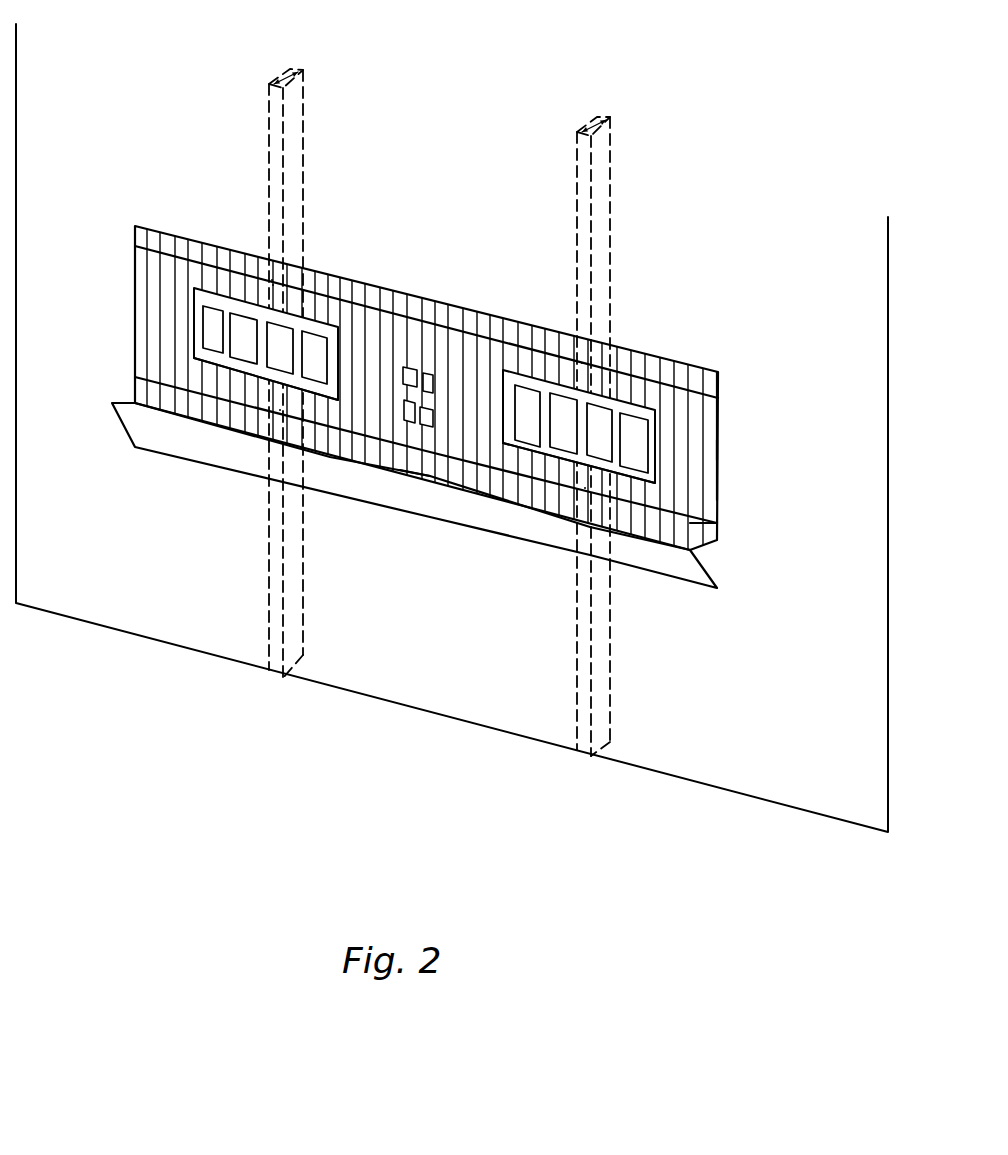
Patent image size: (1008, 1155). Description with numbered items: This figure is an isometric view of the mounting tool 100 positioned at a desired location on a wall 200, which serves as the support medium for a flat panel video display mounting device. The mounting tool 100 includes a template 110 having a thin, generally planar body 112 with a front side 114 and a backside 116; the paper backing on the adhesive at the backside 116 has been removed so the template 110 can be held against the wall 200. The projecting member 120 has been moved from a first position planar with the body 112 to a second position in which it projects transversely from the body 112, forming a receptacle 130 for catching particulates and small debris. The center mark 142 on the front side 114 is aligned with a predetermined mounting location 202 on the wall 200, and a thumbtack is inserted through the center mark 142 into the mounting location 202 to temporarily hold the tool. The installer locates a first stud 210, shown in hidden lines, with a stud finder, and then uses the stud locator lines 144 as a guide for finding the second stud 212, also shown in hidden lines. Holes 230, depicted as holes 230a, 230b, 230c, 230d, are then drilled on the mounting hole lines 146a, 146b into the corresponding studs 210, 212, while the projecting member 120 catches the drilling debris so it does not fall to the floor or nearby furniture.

The mounting tool 100 is at (441, 405).
The template 110 is at (718, 488).
The body 112 is at (713, 473).
The front side 114 is at (712, 504).
The backside 116 is at (718, 453).
The projecting member 120 is at (158, 455).
The receptacle 130 is at (408, 478).
The center mark 142 is at (418, 392).
The stud locator lines 144 is at (322, 284).
The mounting hole line 146a is at (342, 302).
The mounting hole line 146b is at (505, 467).
The wall 200 is at (780, 740).
The mounting location 202 is at (417, 397).
The first stud 210 is at (290, 140).
The second stud 212 is at (600, 165).
The holes 230 is at (272, 278).
The hole 230a is at (273, 285).
The hole 230b is at (582, 363).
The hole 230c is at (280, 410).
The hole 230d is at (585, 488).